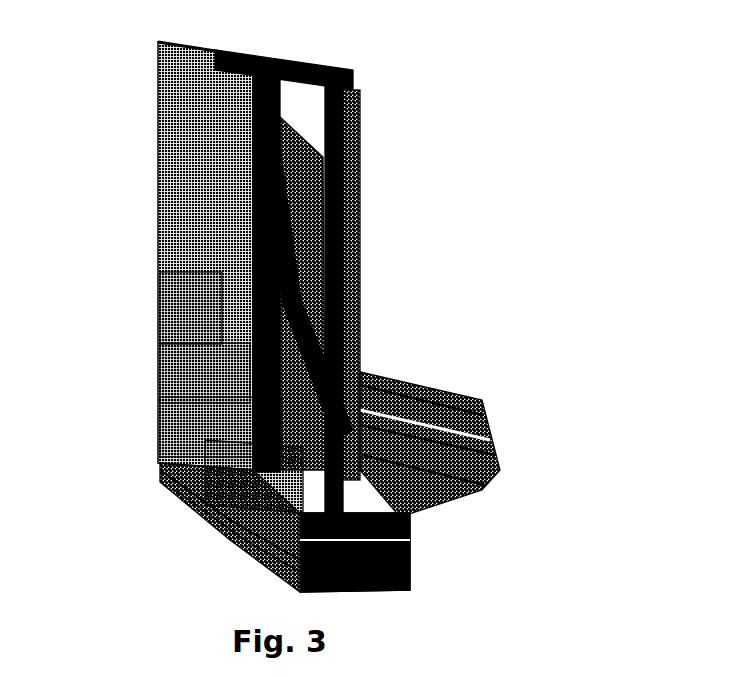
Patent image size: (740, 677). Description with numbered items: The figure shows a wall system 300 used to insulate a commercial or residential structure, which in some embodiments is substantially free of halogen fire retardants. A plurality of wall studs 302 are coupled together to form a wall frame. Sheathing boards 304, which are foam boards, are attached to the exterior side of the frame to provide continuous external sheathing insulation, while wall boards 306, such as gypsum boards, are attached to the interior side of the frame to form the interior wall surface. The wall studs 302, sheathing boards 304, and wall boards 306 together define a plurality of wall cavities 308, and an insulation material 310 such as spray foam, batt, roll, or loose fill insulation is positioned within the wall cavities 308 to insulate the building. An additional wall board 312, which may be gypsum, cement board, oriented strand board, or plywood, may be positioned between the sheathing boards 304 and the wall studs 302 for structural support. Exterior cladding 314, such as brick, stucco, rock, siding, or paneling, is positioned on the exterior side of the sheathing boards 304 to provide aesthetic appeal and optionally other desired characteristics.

The wall system 300 is at (545, 180).
The wall studs 302 is at (340, 135).
The sheathing boards 304 is at (188, 210).
The wall boards 306 is at (360, 308).
The wall cavities 308 is at (297, 105).
The insulation material 310 is at (303, 243).
The additional wall board 312 is at (307, 317).
The exterior cladding 314 is at (187, 376).